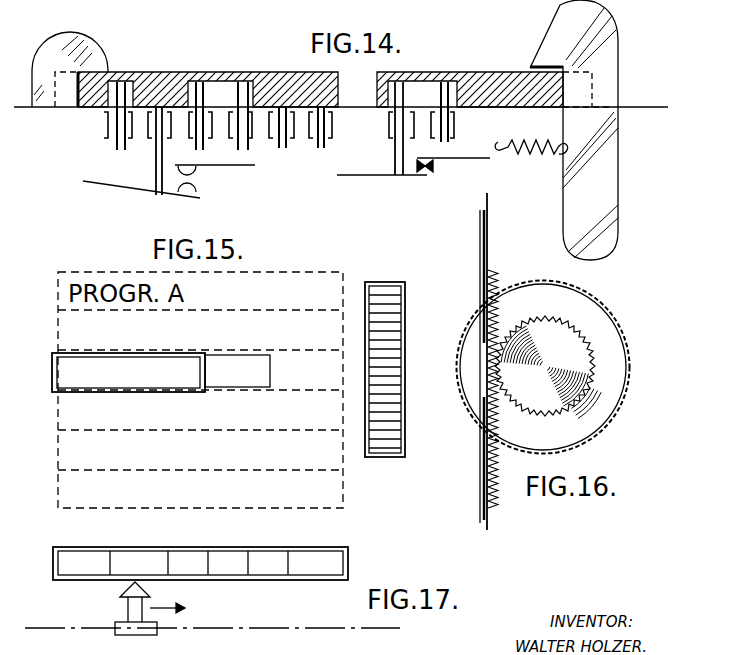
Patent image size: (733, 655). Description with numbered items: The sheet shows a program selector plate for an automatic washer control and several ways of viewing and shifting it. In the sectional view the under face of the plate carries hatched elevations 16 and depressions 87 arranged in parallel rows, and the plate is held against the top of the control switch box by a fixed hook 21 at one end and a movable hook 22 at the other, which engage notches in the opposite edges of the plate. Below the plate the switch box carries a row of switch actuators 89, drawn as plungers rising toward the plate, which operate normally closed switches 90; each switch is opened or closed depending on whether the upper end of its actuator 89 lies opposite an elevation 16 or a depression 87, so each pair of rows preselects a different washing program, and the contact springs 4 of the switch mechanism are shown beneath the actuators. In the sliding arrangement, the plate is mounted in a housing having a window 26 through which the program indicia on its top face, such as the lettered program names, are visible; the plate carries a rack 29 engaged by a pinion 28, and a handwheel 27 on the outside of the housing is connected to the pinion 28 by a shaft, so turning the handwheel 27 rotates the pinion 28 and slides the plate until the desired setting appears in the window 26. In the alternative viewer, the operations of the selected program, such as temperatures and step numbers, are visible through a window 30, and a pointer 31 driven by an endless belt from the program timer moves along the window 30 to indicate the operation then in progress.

In FIG. 14, the contact springs 4 is at (302, 142).
In FIG. 14, the elevations 16 is at (314, 127).
In FIG. 14, the fixed hook 21 is at (50, 44).
In FIG. 14, the movable hook 22 is at (606, 25).
In FIG. 15, the window 26 is at (52, 384).
In FIG. 15, the handwheel 27 is at (385, 296).
In FIG. 16, the handwheel 27 is at (578, 312).
In FIG. 16, the pinion 28 is at (582, 336).
In FIG. 16, the rack 29 is at (486, 455).
In FIG. 17, the window 30 is at (345, 551).
In FIG. 17, the pointer 31 is at (157, 634).
In FIG. 14, the depressions 87 is at (144, 76).
In FIG. 14, the switch actuators 89 is at (398, 156).
In FIG. 14, the normally closed switches 90 is at (196, 176).